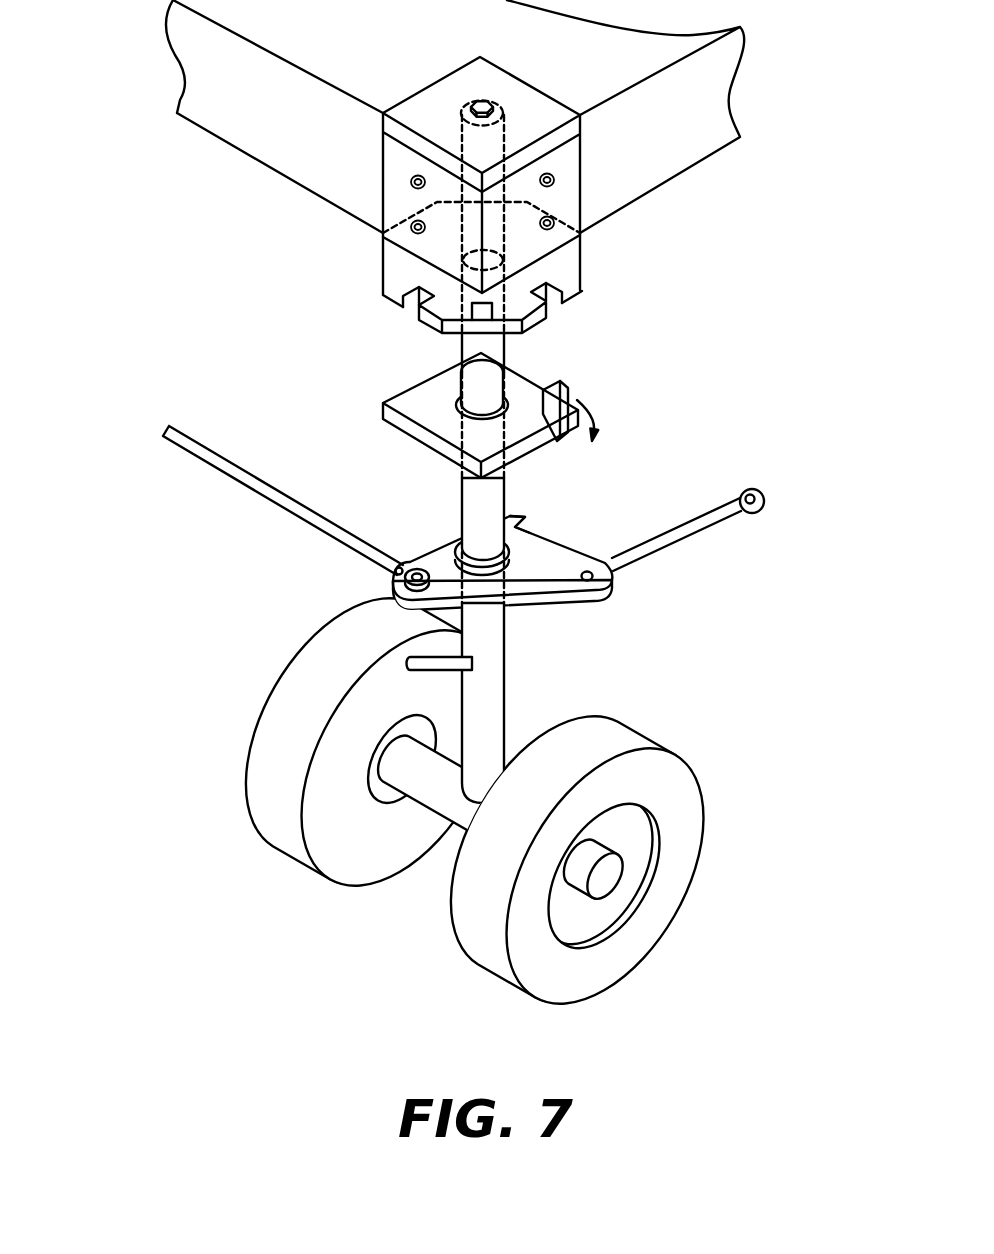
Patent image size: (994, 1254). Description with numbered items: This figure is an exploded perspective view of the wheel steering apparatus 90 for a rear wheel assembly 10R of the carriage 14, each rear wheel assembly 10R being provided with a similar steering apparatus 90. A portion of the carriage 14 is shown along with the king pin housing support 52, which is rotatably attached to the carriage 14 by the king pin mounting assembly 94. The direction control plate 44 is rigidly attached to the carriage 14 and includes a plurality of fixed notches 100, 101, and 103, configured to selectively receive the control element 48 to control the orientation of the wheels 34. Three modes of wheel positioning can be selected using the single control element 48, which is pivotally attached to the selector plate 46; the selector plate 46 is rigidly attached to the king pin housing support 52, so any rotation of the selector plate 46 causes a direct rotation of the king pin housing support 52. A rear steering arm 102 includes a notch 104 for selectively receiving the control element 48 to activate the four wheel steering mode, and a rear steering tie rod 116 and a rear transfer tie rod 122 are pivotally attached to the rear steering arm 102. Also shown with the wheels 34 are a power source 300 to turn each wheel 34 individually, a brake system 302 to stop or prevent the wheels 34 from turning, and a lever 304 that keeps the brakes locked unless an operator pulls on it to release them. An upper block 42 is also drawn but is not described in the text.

The rear wheel assembly 10R is at (205, 775).
The carriage 14 is at (630, 183).
The wheel 34 is at (319, 650).
The upper mounting block 42 is at (398, 176).
The direction control plate 44 is at (398, 281).
The selector plate 46 is at (418, 403).
The control element 48 is at (572, 400).
The king pin housing support 52 is at (497, 708).
The wheel steering apparatus 90 is at (797, 300).
The king pin mounting assembly 94 is at (443, 106).
The fixed notch 100 is at (547, 298).
The fixed notch 101 is at (481, 315).
The rear steering arm 102 is at (558, 553).
The fixed notch 103 is at (410, 300).
The notch 104 is at (530, 522).
The rear steering tie rod 116 is at (672, 553).
The rear transfer tie rod 122 is at (257, 484).
The power source 300 is at (604, 876).
The brake system 302 is at (377, 786).
The lever 304 is at (432, 665).